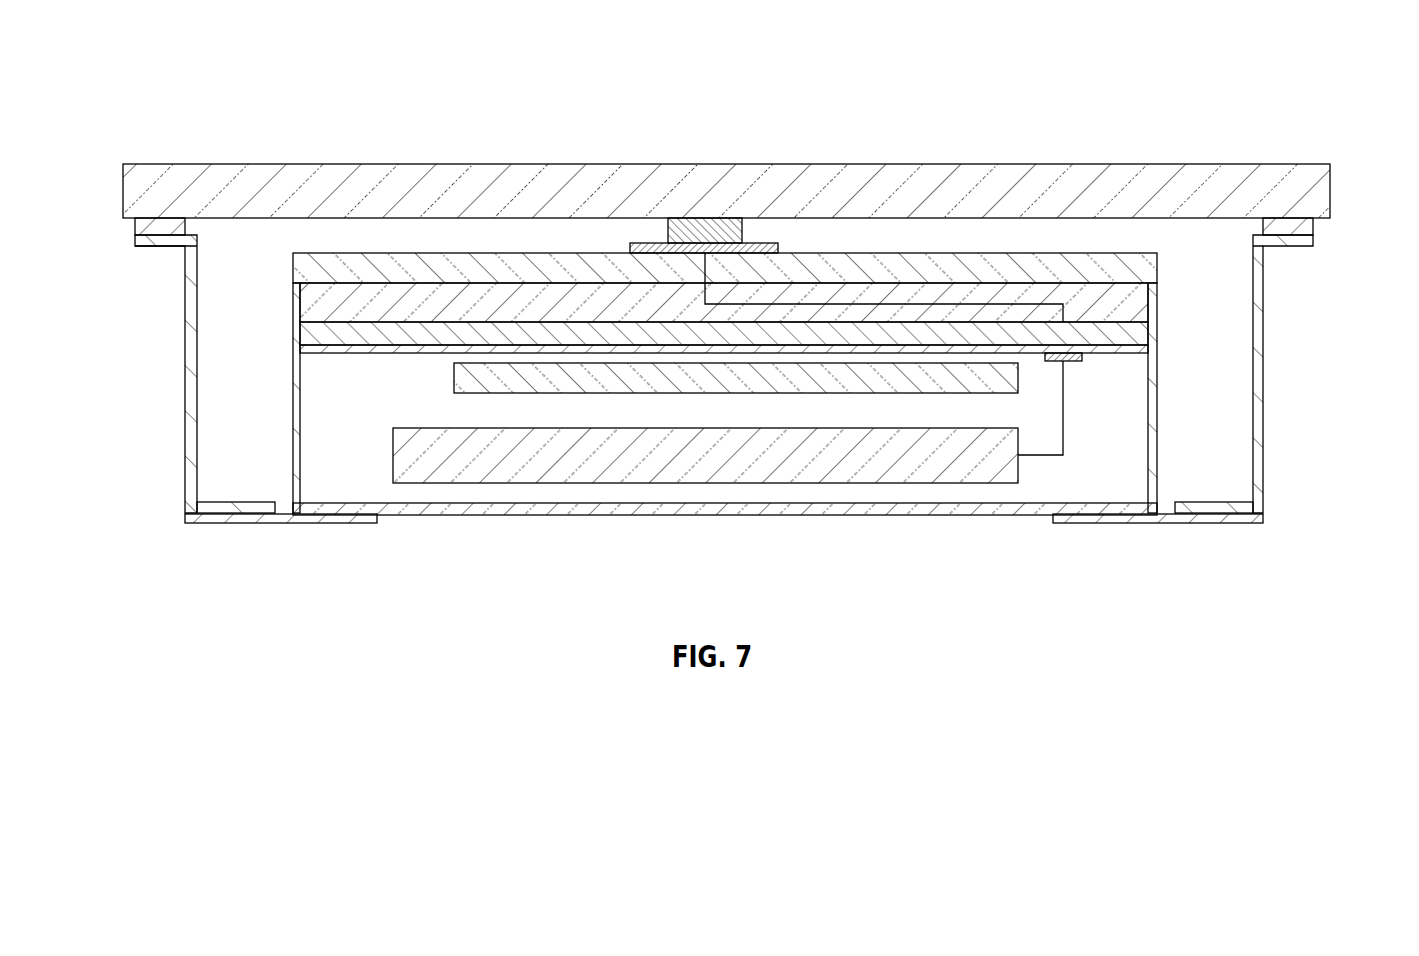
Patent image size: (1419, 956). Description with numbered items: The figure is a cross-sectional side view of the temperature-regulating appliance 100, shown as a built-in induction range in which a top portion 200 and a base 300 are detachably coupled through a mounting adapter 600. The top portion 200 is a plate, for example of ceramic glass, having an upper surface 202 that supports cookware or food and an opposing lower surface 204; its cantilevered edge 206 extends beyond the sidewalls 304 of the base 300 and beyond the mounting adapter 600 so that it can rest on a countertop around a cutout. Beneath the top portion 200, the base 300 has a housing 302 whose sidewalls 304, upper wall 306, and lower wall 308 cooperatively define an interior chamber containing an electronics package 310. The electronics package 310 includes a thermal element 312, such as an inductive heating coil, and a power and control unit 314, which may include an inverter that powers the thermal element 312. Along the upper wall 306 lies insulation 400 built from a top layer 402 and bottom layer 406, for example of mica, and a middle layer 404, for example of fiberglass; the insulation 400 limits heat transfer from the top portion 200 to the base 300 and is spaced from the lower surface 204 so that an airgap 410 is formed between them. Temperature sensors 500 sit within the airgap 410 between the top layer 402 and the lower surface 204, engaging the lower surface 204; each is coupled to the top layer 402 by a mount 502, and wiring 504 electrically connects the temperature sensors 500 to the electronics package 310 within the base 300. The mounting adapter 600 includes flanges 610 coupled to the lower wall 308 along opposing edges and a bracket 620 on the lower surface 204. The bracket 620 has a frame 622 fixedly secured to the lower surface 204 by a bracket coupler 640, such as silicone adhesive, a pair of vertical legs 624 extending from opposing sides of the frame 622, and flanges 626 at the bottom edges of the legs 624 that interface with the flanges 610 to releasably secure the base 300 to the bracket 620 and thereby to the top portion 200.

The temperature-regulating appliance 100 is at (717, 339).
The top portion 200 is at (726, 154).
The upper surface 202 is at (726, 158).
The lower surface 204 is at (1165, 215).
The cantilevered edge 206 is at (108, 242).
The base 300 is at (692, 444).
The housing 302 is at (725, 547).
The sidewalls 304 is at (292, 468).
The upper wall 306 is at (1130, 353).
The lower wall 308 is at (677, 516).
The electronics package 310 is at (700, 467).
The thermal element 312 is at (454, 375).
The power and control unit 314 is at (1008, 460).
The insulation 400 is at (756, 236).
The top layer 402 is at (920, 265).
The middle layer 404 is at (760, 213).
The bottom layer 406 is at (1140, 333).
The airgap 410 is at (580, 171).
The temperature sensors 500 is at (712, 225).
The mount 502 is at (661, 243).
The wiring 504 is at (790, 302).
The mounting adapter 600 is at (717, 345).
The flanges 610 is at (223, 516).
The bracket 620 is at (720, 374).
The frame 622 is at (152, 248).
The legs 624 is at (723, 374).
The flanges 626 is at (205, 502).
The bracket coupler 640 is at (149, 228).